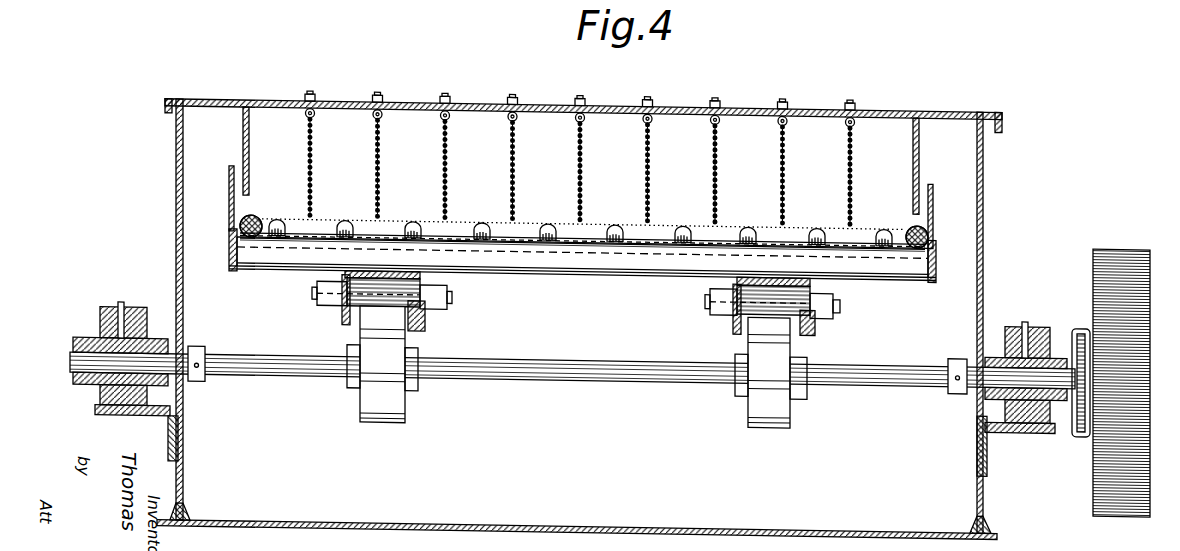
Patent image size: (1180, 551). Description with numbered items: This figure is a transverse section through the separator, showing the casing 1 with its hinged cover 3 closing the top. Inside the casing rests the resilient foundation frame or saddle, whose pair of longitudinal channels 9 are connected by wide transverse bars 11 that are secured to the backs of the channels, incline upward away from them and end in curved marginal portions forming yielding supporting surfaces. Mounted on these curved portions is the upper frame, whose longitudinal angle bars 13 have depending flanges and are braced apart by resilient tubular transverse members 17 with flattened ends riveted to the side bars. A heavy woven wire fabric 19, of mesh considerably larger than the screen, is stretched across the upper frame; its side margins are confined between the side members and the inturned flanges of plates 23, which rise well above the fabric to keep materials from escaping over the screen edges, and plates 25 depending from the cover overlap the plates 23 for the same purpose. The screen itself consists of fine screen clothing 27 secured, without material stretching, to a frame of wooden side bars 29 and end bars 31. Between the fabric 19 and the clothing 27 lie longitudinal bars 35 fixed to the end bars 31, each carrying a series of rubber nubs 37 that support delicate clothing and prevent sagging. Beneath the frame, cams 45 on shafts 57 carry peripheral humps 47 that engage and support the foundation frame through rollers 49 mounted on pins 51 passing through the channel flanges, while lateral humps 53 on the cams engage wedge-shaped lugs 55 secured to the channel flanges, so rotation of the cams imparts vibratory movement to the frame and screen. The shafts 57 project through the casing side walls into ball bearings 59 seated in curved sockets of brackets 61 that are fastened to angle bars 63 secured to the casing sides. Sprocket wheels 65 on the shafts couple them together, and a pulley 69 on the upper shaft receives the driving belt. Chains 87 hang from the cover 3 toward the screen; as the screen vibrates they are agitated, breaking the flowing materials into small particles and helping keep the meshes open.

The casing 1 is at (176, 186).
The cover 3 is at (333, 96).
The longitudinal channels 9 is at (345, 314).
The transverse bars 11 is at (248, 260).
The longitudinal angle bars 13 is at (229, 246).
The transverse brace members 17 is at (515, 243).
The fabric 19 is at (572, 236).
The plates 23 is at (229, 192).
The plates 25 is at (249, 145).
The screen clothing 27 is at (332, 214).
The side bars 29 is at (258, 210).
The end bars 31 is at (388, 234).
The bars 35 is at (360, 229).
The rubber nubs 37 is at (286, 225).
The cams 45 is at (390, 339).
The humps or projections 47 is at (410, 372).
The rollers 49 is at (410, 289).
The pins 51 is at (315, 288).
The lateral humps or projections 53 is at (408, 411).
The wedge-shaped lugs 55 is at (412, 323).
The shafts 57 is at (570, 350).
The bearings 59 is at (100, 328).
The brackets 61 is at (131, 308).
The angle bars 63 is at (128, 410).
The sprocket wheels 65 is at (1081, 307).
The pulley 69 is at (1121, 368).
The chains 87 is at (375, 151).